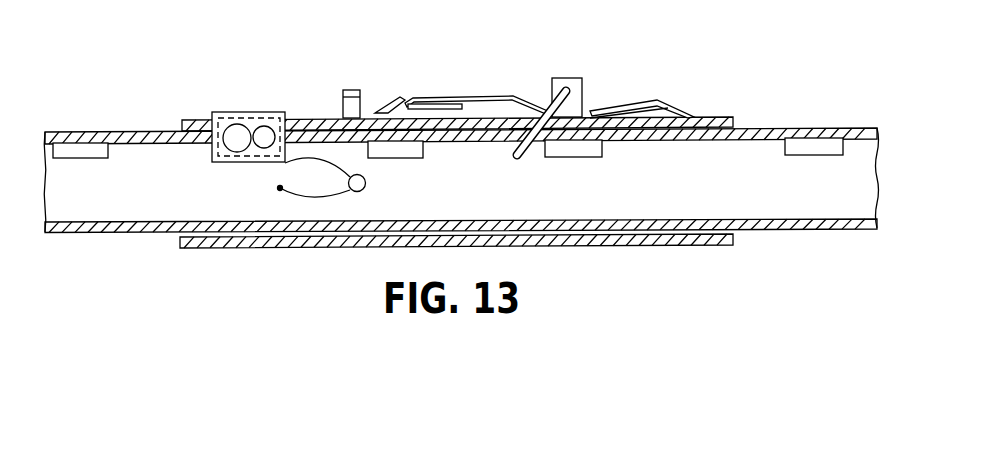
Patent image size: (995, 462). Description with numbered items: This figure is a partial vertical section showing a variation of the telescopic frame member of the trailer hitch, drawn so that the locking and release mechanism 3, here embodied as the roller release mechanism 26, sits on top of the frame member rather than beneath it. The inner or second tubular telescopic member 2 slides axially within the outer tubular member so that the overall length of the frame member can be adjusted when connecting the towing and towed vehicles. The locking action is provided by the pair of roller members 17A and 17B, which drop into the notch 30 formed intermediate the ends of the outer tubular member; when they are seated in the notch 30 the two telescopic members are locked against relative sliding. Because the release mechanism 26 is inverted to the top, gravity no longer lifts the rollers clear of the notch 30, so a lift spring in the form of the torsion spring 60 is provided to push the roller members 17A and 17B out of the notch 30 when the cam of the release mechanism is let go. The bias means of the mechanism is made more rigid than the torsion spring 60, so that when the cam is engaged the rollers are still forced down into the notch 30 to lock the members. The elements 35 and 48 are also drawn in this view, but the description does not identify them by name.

The second tubular telescopic member 2 is at (105, 233).
The locking and release mechanism 3 is at (256, 82).
The roller member 17A is at (258, 125).
The roller member 17B is at (237, 124).
The roller release mechanism 26 is at (286, 95).
The notch 30 is at (77, 148).
The connector post 35 is at (353, 91).
The pin 48 is at (555, 100).
The torsion spring 60 is at (366, 183).